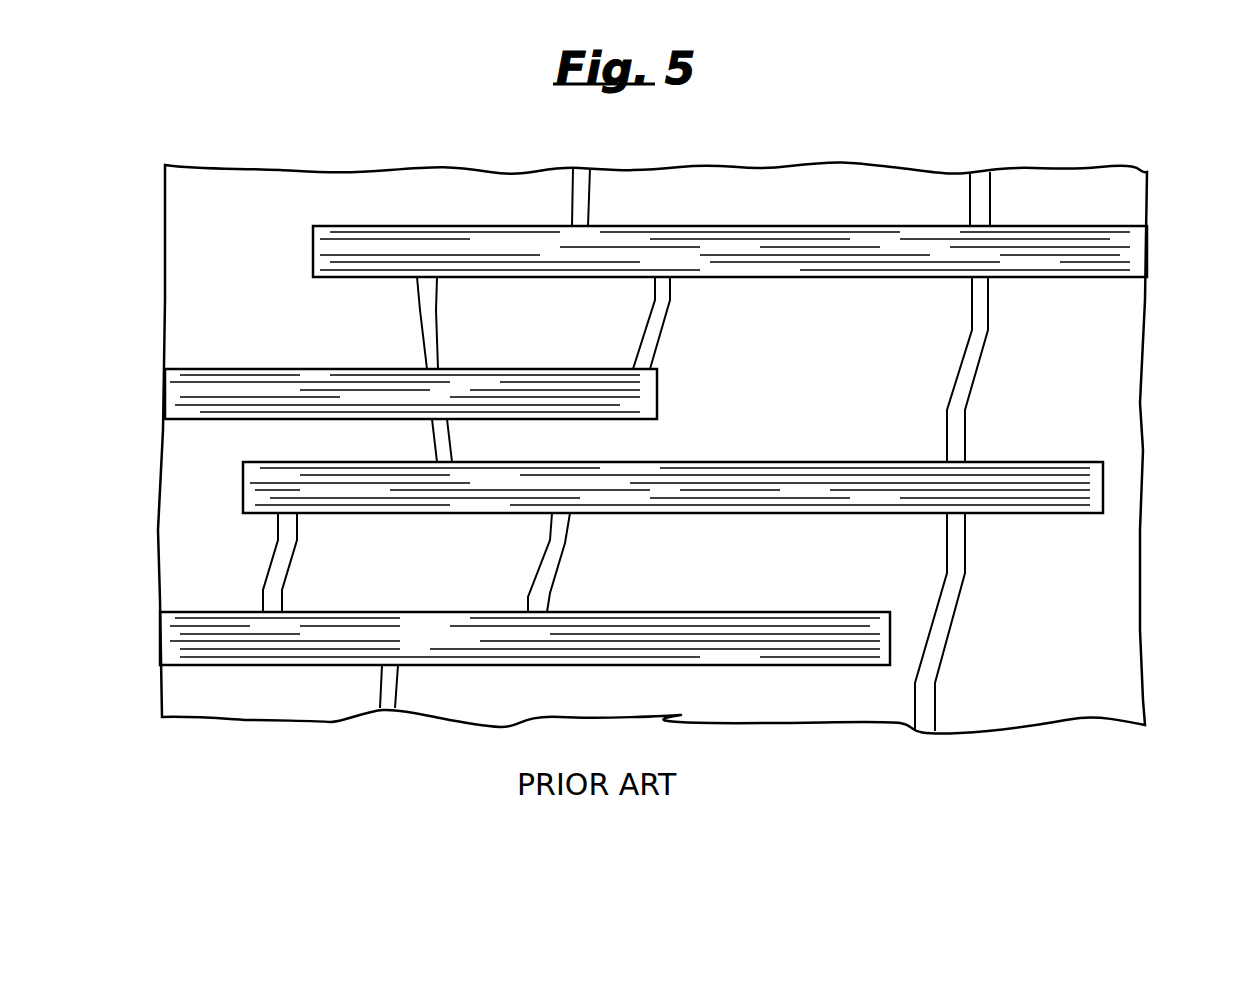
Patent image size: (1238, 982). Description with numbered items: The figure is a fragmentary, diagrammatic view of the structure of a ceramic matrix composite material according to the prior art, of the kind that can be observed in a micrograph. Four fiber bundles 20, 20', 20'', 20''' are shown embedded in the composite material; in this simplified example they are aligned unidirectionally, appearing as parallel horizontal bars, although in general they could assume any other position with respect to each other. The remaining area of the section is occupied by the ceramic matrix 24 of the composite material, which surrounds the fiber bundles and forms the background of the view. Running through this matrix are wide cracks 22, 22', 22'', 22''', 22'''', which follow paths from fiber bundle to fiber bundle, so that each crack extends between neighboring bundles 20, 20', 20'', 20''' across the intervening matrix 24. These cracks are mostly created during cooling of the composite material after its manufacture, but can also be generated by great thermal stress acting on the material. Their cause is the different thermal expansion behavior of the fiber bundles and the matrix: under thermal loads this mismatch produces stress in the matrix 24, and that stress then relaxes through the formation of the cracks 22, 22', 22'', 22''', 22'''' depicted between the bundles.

The fiber bundle 20 is at (772, 274).
The fiber bundle 20' is at (372, 371).
The fiber bundle 20'' is at (740, 510).
The fiber bundle 20''' is at (525, 695).
The crack 22 is at (986, 451).
The crack 22' is at (692, 323).
The crack 22'' is at (472, 323).
The crack 22''' is at (493, 440).
The crack 22'''' is at (658, 438).
The ceramic matrix 24 is at (1133, 638).